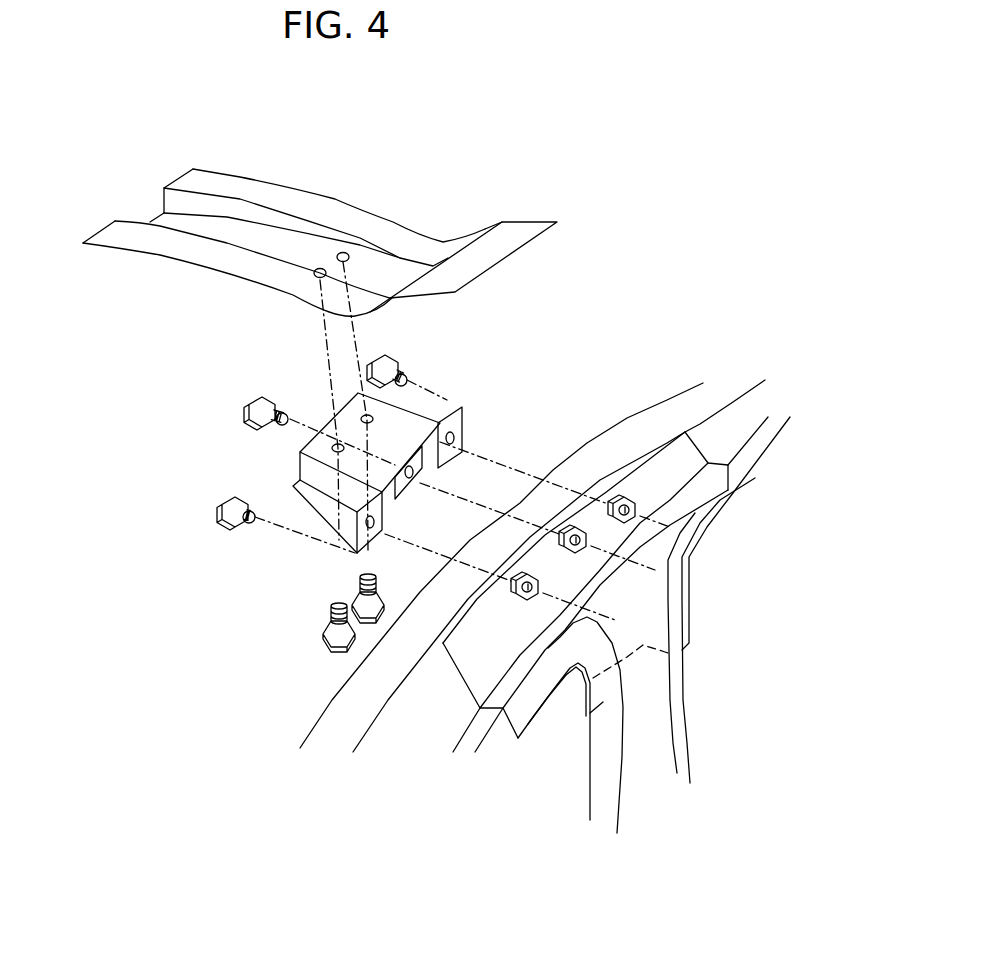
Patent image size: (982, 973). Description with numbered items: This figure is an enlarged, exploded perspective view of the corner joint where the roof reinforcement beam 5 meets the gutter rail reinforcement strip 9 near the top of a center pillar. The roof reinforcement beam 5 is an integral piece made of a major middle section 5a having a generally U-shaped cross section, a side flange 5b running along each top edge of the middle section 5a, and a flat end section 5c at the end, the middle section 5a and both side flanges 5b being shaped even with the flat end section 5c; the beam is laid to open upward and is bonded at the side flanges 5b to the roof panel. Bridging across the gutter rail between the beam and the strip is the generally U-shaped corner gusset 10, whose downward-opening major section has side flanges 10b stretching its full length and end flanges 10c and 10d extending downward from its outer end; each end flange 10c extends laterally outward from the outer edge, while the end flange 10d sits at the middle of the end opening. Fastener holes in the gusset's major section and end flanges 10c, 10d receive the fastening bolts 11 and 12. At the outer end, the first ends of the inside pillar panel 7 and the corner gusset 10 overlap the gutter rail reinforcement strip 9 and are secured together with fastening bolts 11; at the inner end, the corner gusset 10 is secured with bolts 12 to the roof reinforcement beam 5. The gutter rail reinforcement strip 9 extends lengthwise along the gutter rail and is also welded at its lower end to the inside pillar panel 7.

The roof reinforcement beam 5 is at (259, 171).
The major middle section 5a is at (155, 218).
The side flange 5b is at (346, 203).
The flat end section 5c is at (506, 221).
The inside pillar panel 7 is at (592, 782).
The gutter rail reinforcement strip 9 is at (345, 686).
The corner gusset 10 is at (218, 433).
The side flange 10b is at (290, 488).
The end flange 10c is at (465, 435).
The end flange 10d is at (408, 488).
The fastening bolt 11 is at (248, 404).
The bolt 12 is at (352, 596).